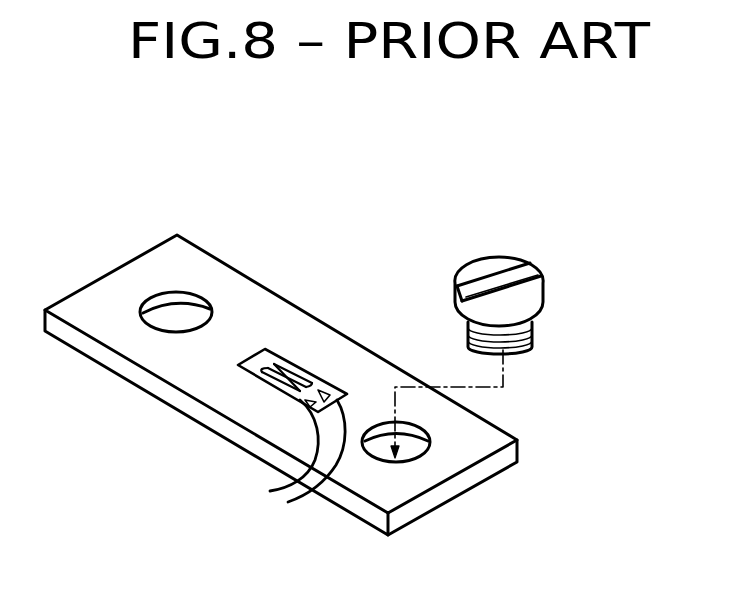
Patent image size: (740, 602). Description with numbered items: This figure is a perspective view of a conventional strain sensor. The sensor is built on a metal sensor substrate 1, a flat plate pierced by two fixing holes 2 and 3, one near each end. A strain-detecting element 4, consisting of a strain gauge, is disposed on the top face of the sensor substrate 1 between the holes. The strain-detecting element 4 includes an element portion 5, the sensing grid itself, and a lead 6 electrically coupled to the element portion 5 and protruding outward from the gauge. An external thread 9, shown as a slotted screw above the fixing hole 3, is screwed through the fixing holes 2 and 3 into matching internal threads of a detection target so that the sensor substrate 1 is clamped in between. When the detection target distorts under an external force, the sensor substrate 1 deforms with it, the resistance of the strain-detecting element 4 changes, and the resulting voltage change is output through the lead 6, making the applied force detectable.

The sensor substrate 1 is at (192, 377).
The fixing hole 2 is at (162, 318).
The fixing hole 3 is at (417, 447).
The strain-detecting element 4 is at (266, 347).
The element portion 5 is at (300, 372).
The lead 6 is at (310, 455).
The external thread 9 is at (522, 292).